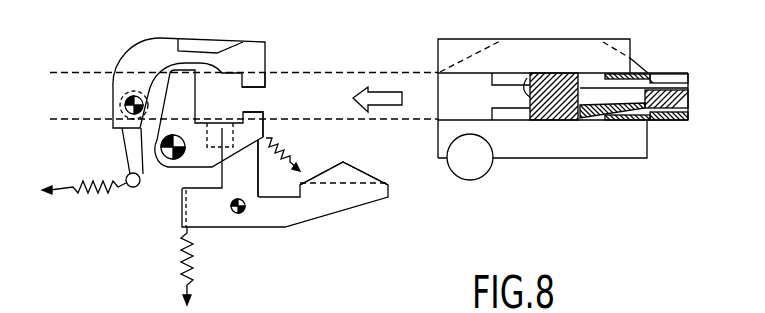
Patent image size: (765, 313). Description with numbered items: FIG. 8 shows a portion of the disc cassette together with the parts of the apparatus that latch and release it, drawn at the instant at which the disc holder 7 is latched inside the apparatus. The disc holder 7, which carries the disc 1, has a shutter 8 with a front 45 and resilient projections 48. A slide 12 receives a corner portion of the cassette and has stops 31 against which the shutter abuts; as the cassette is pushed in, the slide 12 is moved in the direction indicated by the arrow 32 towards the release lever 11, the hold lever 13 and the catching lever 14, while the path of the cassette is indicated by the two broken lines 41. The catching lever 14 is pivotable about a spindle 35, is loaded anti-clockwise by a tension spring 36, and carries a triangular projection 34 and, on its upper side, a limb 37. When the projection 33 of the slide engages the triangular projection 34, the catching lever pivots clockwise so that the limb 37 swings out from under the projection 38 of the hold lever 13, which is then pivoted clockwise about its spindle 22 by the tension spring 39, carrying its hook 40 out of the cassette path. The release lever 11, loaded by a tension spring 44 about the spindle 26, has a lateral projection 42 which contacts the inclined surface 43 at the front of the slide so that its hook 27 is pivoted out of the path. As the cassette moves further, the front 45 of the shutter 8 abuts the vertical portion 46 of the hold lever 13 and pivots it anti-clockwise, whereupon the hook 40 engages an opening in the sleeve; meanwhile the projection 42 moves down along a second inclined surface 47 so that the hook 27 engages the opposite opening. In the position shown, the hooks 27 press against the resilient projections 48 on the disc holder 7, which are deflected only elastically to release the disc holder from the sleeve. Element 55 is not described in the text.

The disc 1 is at (678, 121).
The disc holder 7 is at (670, 97).
The shutter 8 is at (555, 100).
The release lever 11 is at (148, 40).
The slide 12 is at (518, 47).
The hold lever 13 is at (180, 163).
The catching lever 14 is at (292, 210).
The spindle 22 is at (167, 163).
The spindle 26 is at (118, 111).
The hook 27 is at (260, 82).
The stops 31 is at (515, 115).
The arrow 32 is at (380, 100).
The projection 33 is at (467, 167).
The triangular projection 34 is at (353, 172).
The spindle 35 is at (238, 214).
The tension spring 36 is at (190, 263).
The limb 37 is at (243, 177).
The projection 38 is at (203, 152).
The tension spring 39 is at (288, 151).
The hook 40 is at (258, 112).
The broken lines 41 is at (58, 80).
The lateral projection 42 is at (200, 48).
The inclined surface 43 is at (473, 53).
The tension spring 44 is at (84, 179).
The front 45 is at (527, 78).
The vertical portion 46 is at (186, 98).
The second inclined surface 47 is at (647, 72).
The resilient projections 48 is at (625, 110).
The chamfer 55 is at (590, 40).